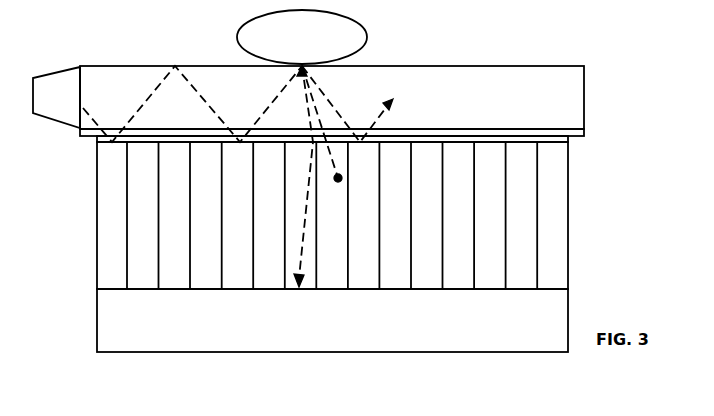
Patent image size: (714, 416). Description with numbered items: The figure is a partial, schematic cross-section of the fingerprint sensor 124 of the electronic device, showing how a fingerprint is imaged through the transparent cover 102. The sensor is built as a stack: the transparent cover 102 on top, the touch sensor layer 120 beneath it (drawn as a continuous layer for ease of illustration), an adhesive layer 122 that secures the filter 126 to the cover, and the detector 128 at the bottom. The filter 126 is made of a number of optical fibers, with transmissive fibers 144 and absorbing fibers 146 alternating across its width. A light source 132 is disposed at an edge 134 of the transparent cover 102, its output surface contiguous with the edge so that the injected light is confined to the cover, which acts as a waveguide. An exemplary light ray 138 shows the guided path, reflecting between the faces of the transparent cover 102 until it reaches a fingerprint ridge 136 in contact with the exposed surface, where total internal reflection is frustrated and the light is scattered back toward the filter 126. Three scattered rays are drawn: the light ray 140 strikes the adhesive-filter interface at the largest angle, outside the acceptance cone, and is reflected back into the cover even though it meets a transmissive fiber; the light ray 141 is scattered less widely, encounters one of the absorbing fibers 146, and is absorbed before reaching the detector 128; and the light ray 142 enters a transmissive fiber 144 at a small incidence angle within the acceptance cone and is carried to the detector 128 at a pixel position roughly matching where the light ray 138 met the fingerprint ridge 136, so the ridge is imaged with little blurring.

The transparent cover 102 is at (332, 97).
The touch sensor layer 120 is at (80, 133).
The adhesive layer 122 is at (97, 142).
The fingerprint sensor 124 is at (584, 20).
The filter 126 is at (580, 147).
The detector 128 is at (332, 320).
The light source 132 is at (56, 97).
The edge 134 is at (80, 78).
The fingerprint ridge 136 is at (302, 37).
The light ray 138 is at (150, 97).
The light ray 140 is at (350, 94).
The light ray 141 is at (342, 175).
The light ray 142 is at (312, 197).
The transmissive fibers 144 is at (230, 285).
The absorbing fibers 146 is at (265, 285).